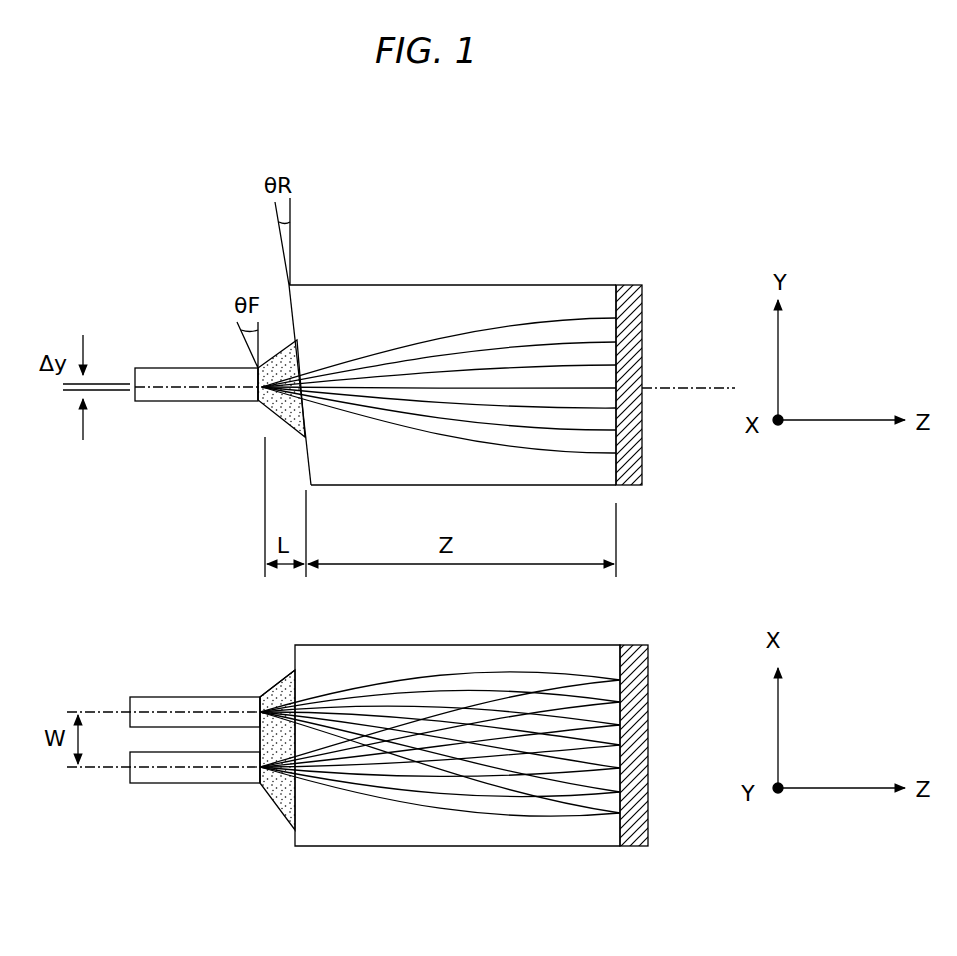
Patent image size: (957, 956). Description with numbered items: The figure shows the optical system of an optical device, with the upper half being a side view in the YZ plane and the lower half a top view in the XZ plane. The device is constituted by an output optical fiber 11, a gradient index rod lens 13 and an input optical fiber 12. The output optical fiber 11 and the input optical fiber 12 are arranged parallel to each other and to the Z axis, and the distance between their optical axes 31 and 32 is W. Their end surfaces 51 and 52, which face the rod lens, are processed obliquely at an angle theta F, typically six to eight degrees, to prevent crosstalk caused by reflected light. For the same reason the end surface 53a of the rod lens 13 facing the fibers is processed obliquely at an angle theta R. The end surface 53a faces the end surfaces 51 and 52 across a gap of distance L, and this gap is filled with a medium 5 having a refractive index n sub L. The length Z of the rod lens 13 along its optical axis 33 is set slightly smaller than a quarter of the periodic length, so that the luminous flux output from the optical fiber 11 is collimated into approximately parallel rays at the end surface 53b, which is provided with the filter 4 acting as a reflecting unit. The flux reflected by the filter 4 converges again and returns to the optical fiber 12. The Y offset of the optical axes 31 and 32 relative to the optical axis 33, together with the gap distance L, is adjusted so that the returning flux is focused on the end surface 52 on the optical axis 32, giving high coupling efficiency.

The output optical fiber 11 is at (168, 375).
The input optical fiber 12 is at (165, 705).
The gradient index rod lens 13 is at (497, 298).
The optical axis of output optical fiber 31 is at (160, 403).
The optical axis of input optical fiber 32 is at (98, 708).
The optical axis of rod lens 33 is at (668, 393).
The filter 4 is at (643, 293).
The medium 5 is at (275, 407).
The end surface of output optical fiber 51 is at (253, 368).
The end surface of input optical fiber 52 is at (255, 697).
The end surface of rod lens facing the optical fibers 53a is at (293, 317).
The end surface of rod lens provided with the filter 53b is at (612, 304).